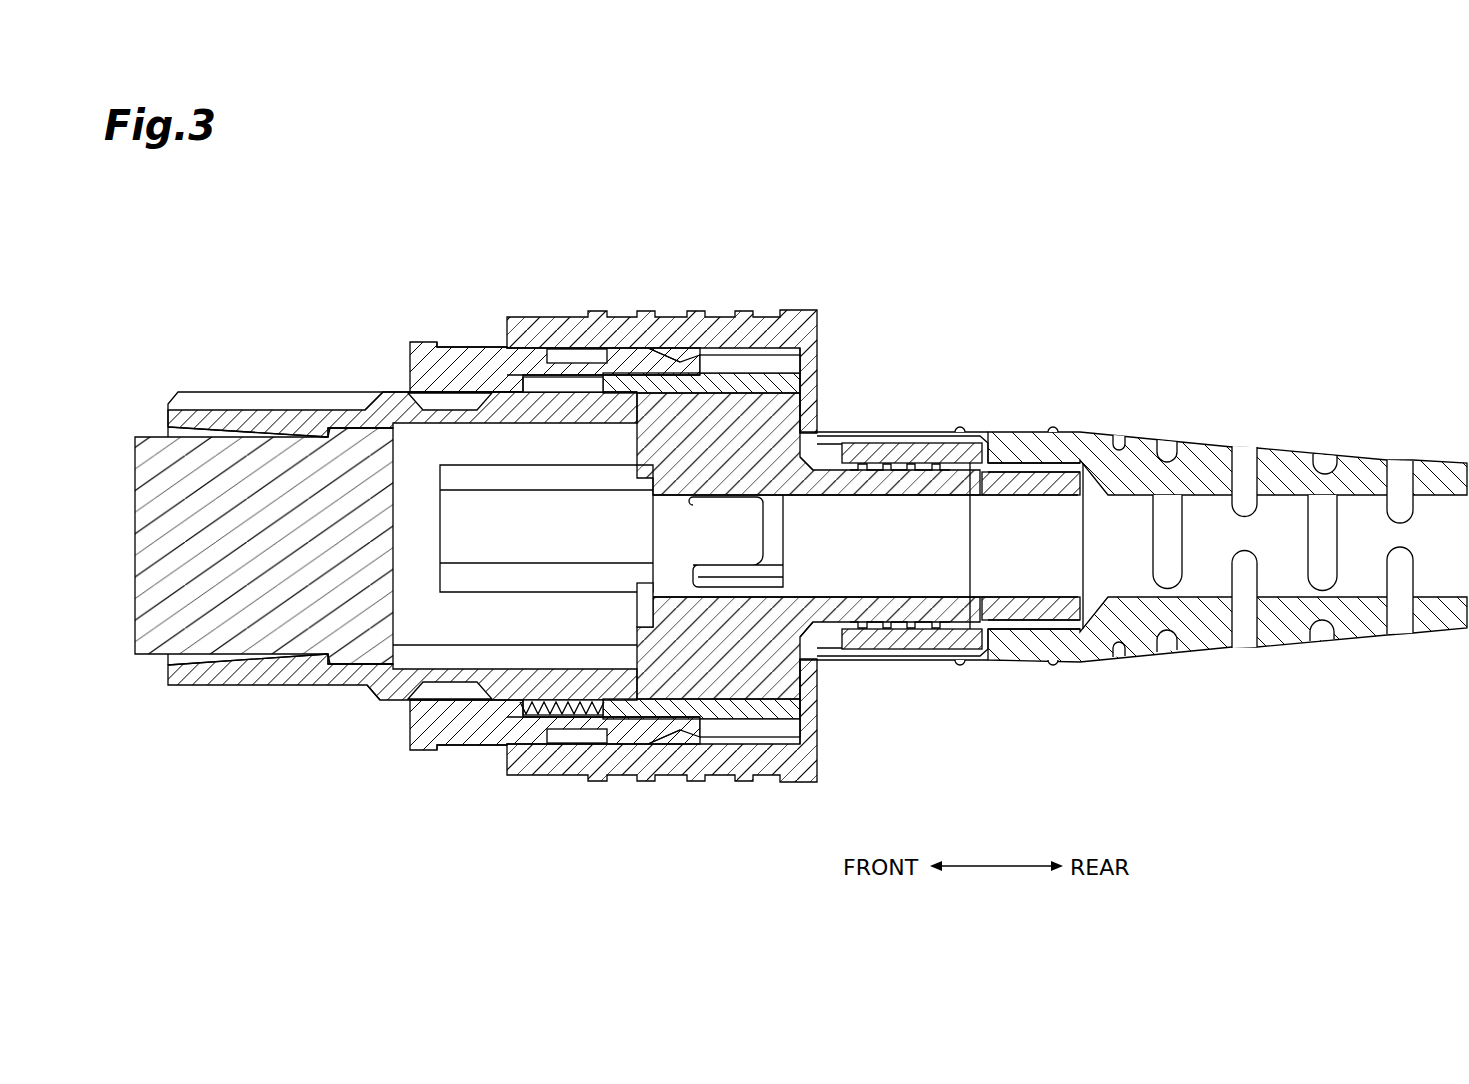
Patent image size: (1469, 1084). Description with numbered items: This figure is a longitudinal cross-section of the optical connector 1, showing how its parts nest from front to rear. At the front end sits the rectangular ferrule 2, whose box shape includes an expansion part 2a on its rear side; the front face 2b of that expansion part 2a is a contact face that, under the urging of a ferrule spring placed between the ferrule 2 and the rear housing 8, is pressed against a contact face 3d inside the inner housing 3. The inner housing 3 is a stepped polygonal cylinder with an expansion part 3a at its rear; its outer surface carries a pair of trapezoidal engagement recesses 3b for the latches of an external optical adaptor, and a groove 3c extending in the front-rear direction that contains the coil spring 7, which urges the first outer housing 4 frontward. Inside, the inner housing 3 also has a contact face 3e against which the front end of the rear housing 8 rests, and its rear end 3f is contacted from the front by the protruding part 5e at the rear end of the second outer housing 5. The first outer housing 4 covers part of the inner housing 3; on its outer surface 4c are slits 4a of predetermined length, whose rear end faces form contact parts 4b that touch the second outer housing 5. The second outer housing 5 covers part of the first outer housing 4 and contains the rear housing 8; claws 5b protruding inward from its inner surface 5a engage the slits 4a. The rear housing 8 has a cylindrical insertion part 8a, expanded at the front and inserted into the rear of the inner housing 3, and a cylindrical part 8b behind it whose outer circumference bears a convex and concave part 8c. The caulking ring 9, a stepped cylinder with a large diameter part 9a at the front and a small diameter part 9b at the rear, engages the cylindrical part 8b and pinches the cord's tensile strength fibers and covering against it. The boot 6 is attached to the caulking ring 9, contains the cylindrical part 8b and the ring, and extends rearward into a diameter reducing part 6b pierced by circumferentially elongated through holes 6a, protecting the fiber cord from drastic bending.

The optical connector 1 is at (1033, 210).
The ferrule 2 is at (256, 558).
The expansion part 2a is at (362, 657).
The front face 2b is at (322, 666).
The inner housing 3 is at (518, 575).
The expansion part 3a is at (748, 722).
The engagement recesses 3b is at (440, 405).
The groove 3c is at (585, 742).
The contact face 3d is at (325, 410).
The contact face 3e is at (640, 744).
The rear end 3f is at (808, 385).
The first outer housing 4 is at (563, 561).
The slits 4a is at (602, 355).
The contact parts 4b is at (686, 352).
The outer surface 4c is at (483, 345).
The second outer housing 5 is at (678, 564).
The inner surface 5a is at (566, 355).
The claws 5b is at (650, 348).
The protruding part 5e is at (815, 410).
The boot 6 is at (1133, 536).
The through holes 6a is at (1245, 650).
The diameter reducing part 6b is at (1218, 444).
The coil spring 7 is at (530, 716).
The rear housing 8 is at (735, 572).
The insertion part 8a is at (792, 682).
The cylindrical part 8b is at (947, 652).
The convex and concave part 8c is at (893, 652).
The caulking ring 9 is at (969, 497).
The large diameter part 9a is at (960, 432).
The small diameter part 9b is at (1072, 448).